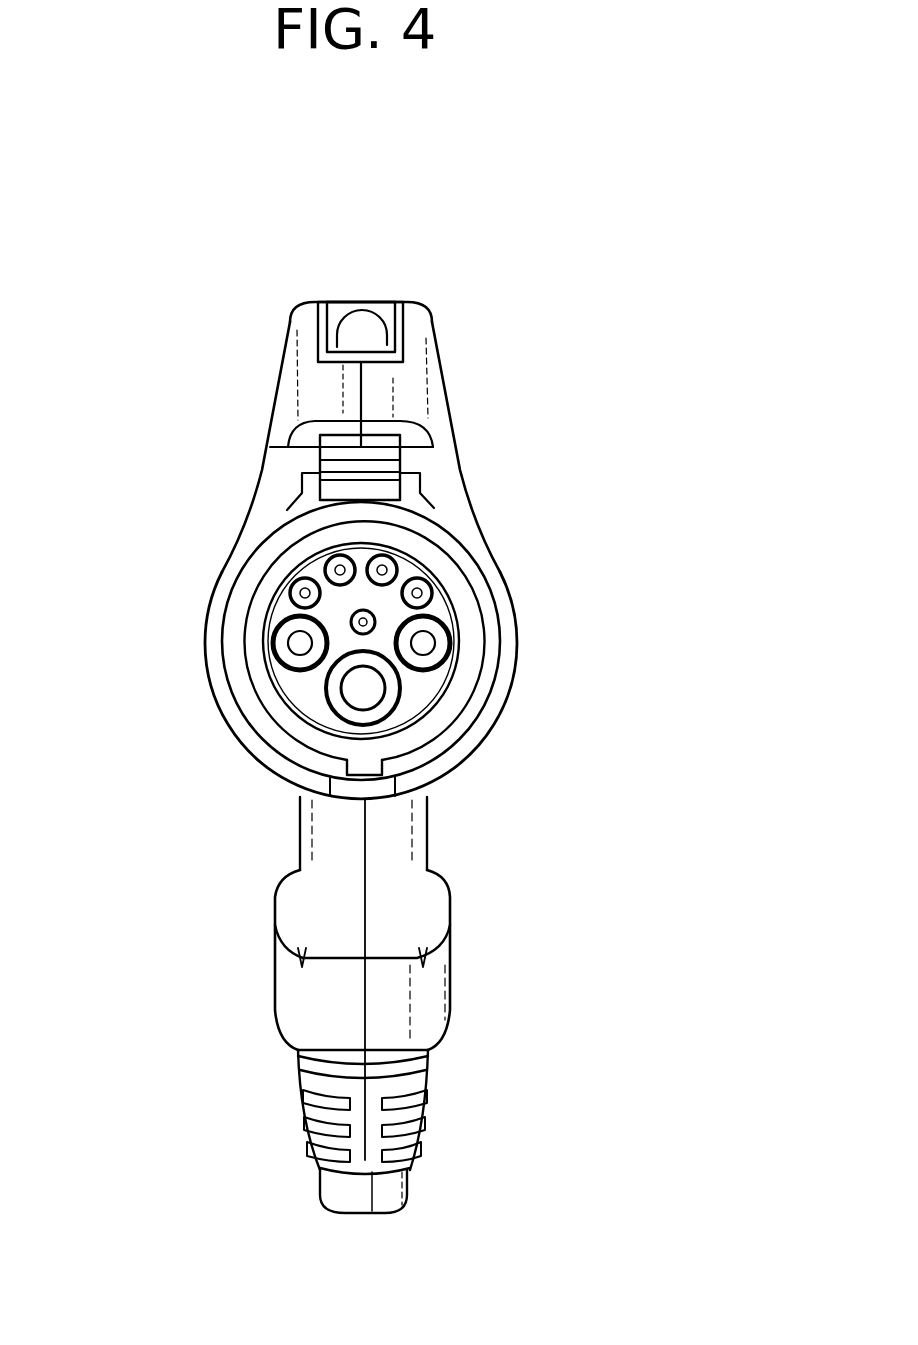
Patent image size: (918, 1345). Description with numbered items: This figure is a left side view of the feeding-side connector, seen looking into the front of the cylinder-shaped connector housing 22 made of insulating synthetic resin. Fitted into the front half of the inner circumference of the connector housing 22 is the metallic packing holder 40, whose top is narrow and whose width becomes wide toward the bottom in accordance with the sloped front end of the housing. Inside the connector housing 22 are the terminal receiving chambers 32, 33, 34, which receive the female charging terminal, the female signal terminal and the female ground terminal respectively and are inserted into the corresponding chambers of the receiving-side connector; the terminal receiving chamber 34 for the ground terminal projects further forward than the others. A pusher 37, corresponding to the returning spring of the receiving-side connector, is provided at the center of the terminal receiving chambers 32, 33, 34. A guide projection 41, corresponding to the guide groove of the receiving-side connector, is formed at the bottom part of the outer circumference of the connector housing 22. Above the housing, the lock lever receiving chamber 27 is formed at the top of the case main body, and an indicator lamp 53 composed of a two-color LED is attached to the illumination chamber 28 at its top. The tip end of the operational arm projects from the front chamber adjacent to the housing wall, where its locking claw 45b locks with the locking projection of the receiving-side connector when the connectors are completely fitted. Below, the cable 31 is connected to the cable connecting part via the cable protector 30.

The connector housing 22 is at (288, 747).
The packing holder 40 is at (297, 666).
The lock lever receiving chamber 27 is at (445, 395).
The illumination chamber 28 is at (392, 330).
The indicator lamp 53 is at (368, 320).
The locking claw 45b is at (390, 490).
The guide projection 41 is at (368, 770).
The pusher 37 is at (370, 617).
The terminal receiving chamber 33 is at (300, 606).
The terminal receiving chamber 32 is at (287, 660).
The terminal receiving chamber 34 is at (326, 690).
The cable protector 30 is at (428, 1093).
The cable 31 is at (413, 1187).